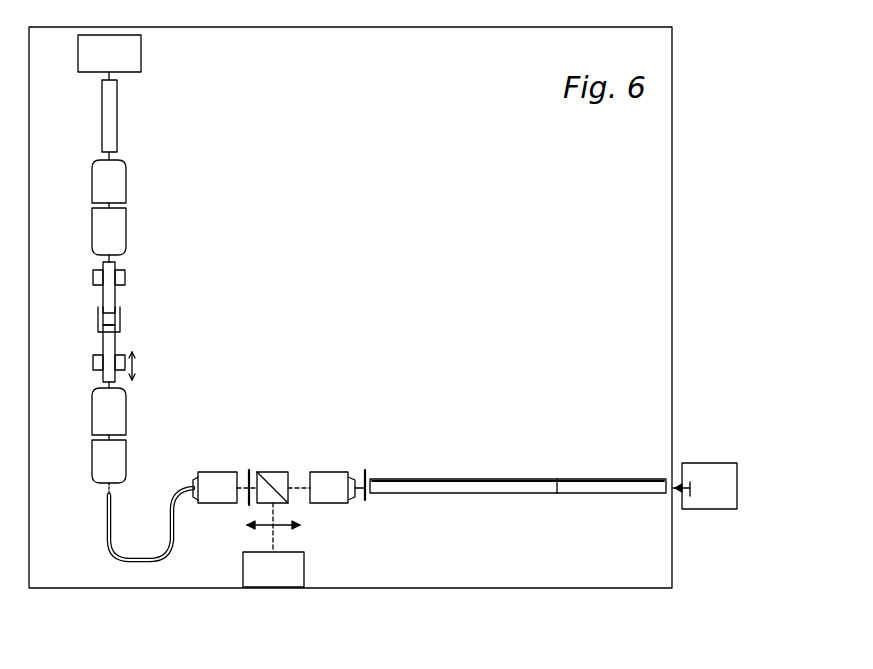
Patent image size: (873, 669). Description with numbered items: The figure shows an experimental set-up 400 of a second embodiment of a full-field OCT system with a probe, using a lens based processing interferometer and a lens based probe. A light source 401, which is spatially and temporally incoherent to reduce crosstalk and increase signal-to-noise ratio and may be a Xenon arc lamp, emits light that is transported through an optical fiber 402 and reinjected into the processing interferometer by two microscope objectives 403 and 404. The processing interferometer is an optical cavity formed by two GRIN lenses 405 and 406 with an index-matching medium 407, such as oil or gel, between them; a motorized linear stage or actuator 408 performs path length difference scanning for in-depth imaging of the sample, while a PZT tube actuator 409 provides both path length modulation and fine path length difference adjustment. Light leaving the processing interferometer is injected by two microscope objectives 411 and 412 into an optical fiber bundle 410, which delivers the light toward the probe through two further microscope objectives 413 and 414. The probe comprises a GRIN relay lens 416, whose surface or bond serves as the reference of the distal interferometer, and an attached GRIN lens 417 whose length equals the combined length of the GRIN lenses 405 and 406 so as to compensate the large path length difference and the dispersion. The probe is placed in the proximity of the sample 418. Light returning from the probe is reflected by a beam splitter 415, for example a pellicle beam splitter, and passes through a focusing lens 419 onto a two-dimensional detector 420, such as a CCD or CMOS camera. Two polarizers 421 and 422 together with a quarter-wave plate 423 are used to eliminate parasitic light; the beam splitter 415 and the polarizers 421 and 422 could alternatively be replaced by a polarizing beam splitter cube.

The optical measurement system 400 is at (672, 182).
The light source 401 is at (118, 53).
The optical fiber 402 is at (110, 116).
The microscope objective 403 is at (117, 187).
The microscope objective 404 is at (117, 229).
The GRIN lens 405 is at (110, 294).
The GRIN lens 406 is at (112, 339).
The index-matching medium 407 is at (98, 320).
The motorized linear stage or actuator 408 is at (93, 280).
The PZT tube actuator 409 is at (93, 362).
The optical fiber bundle 410 is at (107, 528).
The microscope objective 411 is at (117, 409).
The microscope objective 412 is at (105, 460).
The microscope objective 413 is at (216, 478).
The microscope objective 414 is at (333, 490).
The beam splitter 415 is at (278, 480).
The GRIN relay lens 416 is at (452, 482).
The GRIN lens 417 is at (595, 487).
The sample 418 is at (715, 473).
The focusing lens 419 is at (268, 535).
The 2D detector 420 is at (245, 570).
The polarizer 421 is at (249, 470).
The polarizer 422 is at (298, 513).
The quarter-wave plate 423 is at (368, 500).